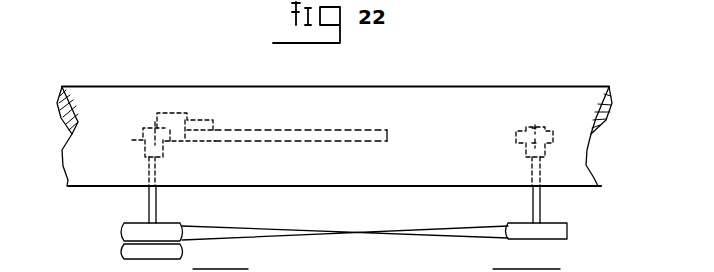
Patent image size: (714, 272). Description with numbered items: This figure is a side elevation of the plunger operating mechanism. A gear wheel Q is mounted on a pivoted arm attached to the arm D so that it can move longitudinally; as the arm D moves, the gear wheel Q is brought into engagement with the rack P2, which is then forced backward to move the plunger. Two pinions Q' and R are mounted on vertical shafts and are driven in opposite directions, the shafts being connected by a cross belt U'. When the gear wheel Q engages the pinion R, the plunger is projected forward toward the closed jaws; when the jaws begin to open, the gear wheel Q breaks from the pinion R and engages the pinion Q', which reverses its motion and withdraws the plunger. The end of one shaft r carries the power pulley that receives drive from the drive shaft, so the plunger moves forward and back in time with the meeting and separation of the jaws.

The arm D is at (427, 177).
The pinion Q' is at (135, 146).
The gear wheel Q is at (186, 114).
The rack P2 is at (320, 143).
The pinion R is at (541, 128).
The shaft r is at (533, 199).
The belt and pulleys U' is at (344, 241).